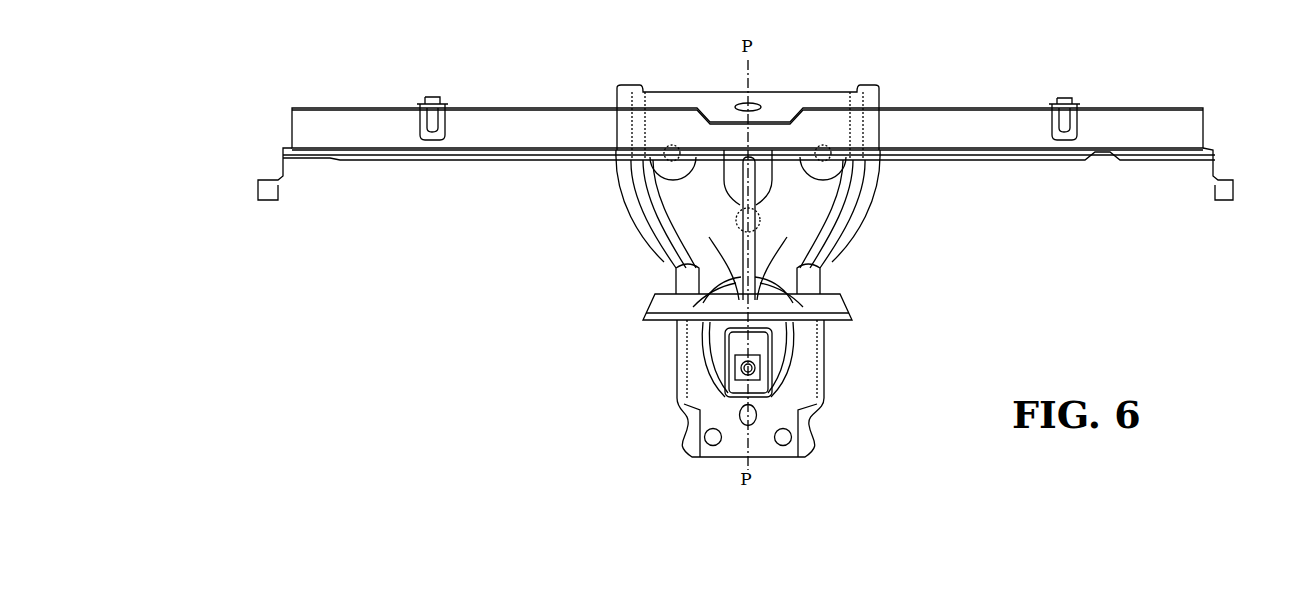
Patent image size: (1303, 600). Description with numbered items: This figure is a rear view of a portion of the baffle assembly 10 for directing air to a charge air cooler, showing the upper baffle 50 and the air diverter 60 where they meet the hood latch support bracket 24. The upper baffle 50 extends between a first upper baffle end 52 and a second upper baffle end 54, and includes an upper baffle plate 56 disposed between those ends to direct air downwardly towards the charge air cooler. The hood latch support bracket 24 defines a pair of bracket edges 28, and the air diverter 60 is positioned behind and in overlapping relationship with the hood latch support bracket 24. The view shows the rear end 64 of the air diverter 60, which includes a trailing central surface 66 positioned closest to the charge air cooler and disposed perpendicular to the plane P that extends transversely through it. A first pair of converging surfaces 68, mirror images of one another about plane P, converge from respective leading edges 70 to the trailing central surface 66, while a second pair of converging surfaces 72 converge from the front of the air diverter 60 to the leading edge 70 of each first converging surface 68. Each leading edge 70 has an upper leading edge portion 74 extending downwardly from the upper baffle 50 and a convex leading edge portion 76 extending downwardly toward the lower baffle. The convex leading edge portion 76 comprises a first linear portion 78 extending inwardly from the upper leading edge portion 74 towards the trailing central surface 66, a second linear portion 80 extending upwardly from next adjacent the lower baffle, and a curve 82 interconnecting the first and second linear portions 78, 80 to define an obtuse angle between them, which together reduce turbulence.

The baffle assembly 10 is at (1141, 104).
The hood latch support bracket 24 is at (838, 92).
The bracket edges 28 is at (627, 197).
The upper baffle 50 is at (1010, 107).
The first upper baffle end 52 is at (292, 130).
The second upper baffle end 54 is at (1205, 132).
The upper baffle plate 56 is at (405, 163).
The air diverter 60 is at (727, 300).
The rear end 64 is at (757, 195).
The trailing central surface 66 is at (843, 317).
The first pair of converging surfaces 68 is at (727, 237).
The leading edges 70 is at (707, 210).
The second pair of converging surfaces 72 is at (665, 315).
The upper leading edge portion 74 is at (647, 210).
The convex leading edge portion 76 is at (717, 320).
The first linear portion 78 is at (650, 300).
The second linear portion 80 is at (730, 317).
The curve 82 is at (660, 312).